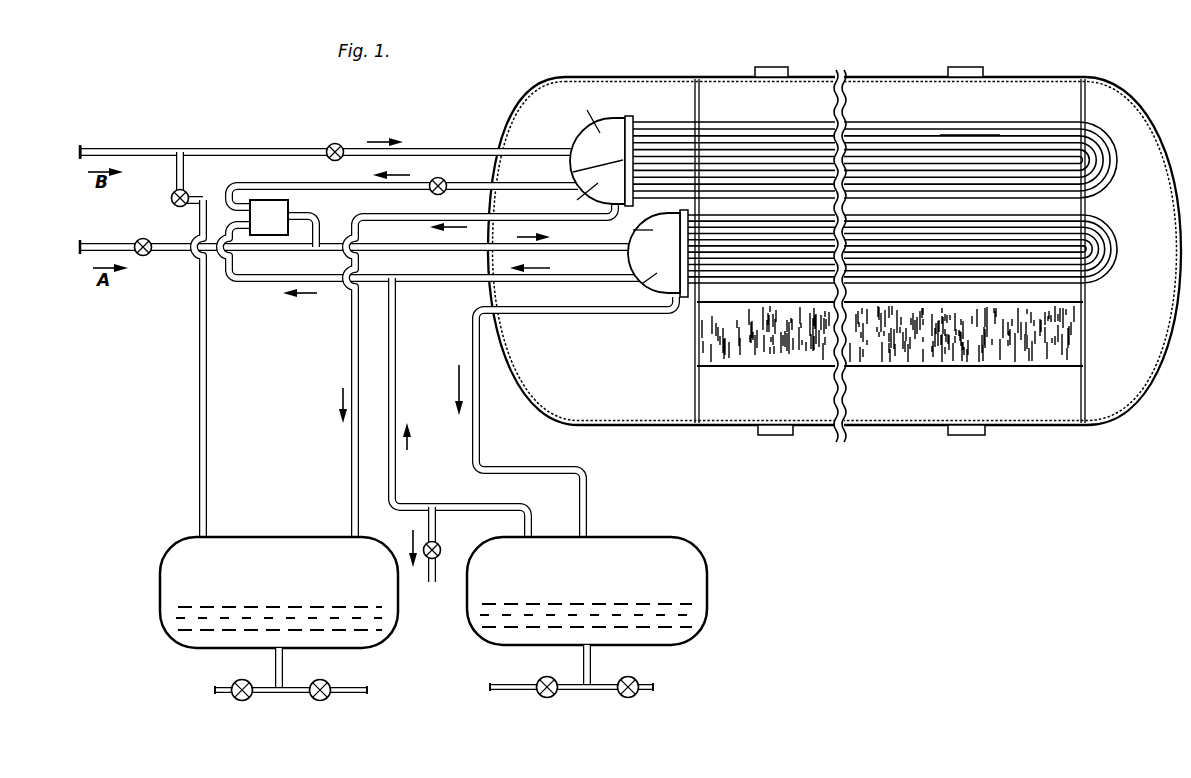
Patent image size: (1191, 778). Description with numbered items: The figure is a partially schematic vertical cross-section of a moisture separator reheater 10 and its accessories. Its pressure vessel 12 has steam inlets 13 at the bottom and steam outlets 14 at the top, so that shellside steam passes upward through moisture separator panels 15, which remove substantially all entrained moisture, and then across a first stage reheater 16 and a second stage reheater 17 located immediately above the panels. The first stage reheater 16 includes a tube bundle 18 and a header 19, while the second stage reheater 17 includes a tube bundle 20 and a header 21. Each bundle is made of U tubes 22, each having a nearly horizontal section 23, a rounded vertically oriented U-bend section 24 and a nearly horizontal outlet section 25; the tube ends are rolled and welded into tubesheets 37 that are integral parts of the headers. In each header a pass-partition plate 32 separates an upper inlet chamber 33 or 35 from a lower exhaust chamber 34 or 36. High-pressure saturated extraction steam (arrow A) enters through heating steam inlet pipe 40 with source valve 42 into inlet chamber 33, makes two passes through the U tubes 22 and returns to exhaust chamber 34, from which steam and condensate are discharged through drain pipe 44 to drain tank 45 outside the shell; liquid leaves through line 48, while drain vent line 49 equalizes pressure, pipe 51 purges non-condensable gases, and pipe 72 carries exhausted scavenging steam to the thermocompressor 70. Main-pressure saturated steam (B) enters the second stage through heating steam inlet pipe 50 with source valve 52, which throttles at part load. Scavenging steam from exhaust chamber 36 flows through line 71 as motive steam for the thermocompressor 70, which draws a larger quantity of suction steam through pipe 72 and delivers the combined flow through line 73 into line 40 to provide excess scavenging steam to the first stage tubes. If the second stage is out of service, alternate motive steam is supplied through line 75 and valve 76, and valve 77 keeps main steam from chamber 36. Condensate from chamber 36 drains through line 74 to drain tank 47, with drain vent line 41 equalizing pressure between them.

The moisture separator reheater 10 is at (912, 469).
The pressure vessel 12 is at (1133, 410).
The steam inlets 13 is at (773, 436).
The steam outlets 14 is at (768, 66).
The moisture separator panels 15 is at (782, 350).
The first stage reheater 16 is at (1032, 216).
The second stage reheater 17 is at (1032, 111).
The tube bundle 18 is at (800, 212).
The header 19 is at (677, 213).
The tube bundle 20 is at (802, 118).
The header 21 is at (617, 118).
The U tubes 22 is at (969, 132).
The nearly horizontal section 23 is at (748, 122).
The U-bend section 24 is at (1108, 132).
The nearly horizontal outlet section 25 is at (870, 197).
The pass-partition plate 32 is at (607, 162).
The upper inlet chamber 33 is at (632, 231).
The lower exhaust chamber 34 is at (635, 289).
The upper inlet chamber 35 is at (582, 116).
The lower exhaust chamber 36 is at (574, 197).
The tubesheets 37 is at (636, 117).
The heating steam inlet pipe 40 is at (167, 242).
The drain vent line 41 is at (199, 400).
The source valve 42 is at (141, 239).
The drain pipe 44 is at (547, 316).
The drain tank 45 is at (650, 537).
The drain tank 47 is at (277, 538).
The line 48 is at (284, 666).
The drain vent line 49 is at (417, 273).
The heating steam inlet pipe 50 is at (195, 147).
The pipe 51 is at (440, 537).
The source valve 52 is at (338, 144).
The thermocompressor 70 is at (330, 226).
The line 71 is at (277, 181).
The pipe 72 is at (233, 283).
The line 73 is at (314, 231).
The line 74 is at (351, 355).
The line 75 is at (175, 173).
The valve 76 is at (190, 191).
The valve 77 is at (448, 176).